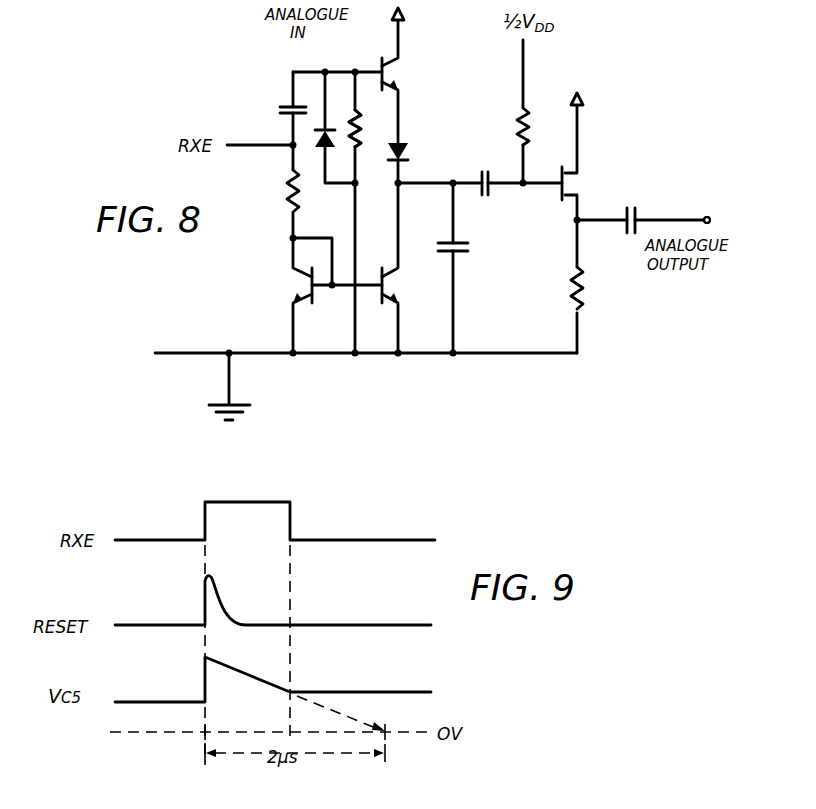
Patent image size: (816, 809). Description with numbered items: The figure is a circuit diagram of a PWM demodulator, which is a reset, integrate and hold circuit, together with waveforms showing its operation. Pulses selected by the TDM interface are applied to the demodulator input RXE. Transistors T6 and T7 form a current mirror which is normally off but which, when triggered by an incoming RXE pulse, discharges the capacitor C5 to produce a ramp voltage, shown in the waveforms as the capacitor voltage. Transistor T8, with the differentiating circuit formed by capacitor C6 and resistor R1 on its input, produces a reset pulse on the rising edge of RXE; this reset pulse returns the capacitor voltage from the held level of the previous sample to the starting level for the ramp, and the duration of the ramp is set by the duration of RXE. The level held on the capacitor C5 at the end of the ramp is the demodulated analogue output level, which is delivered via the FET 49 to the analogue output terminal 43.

The differentiating capacitor C6 is at (273, 113).
The differentiating resistor R1 is at (369, 126).
The reset transistor T8 is at (397, 74).
The current mirror transistor T6 is at (306, 285).
The current mirror transistor T7 is at (394, 281).
The integrating capacitor C5 is at (461, 249).
The FET 49 is at (579, 184).
The analogue output terminal 43 is at (706, 216).